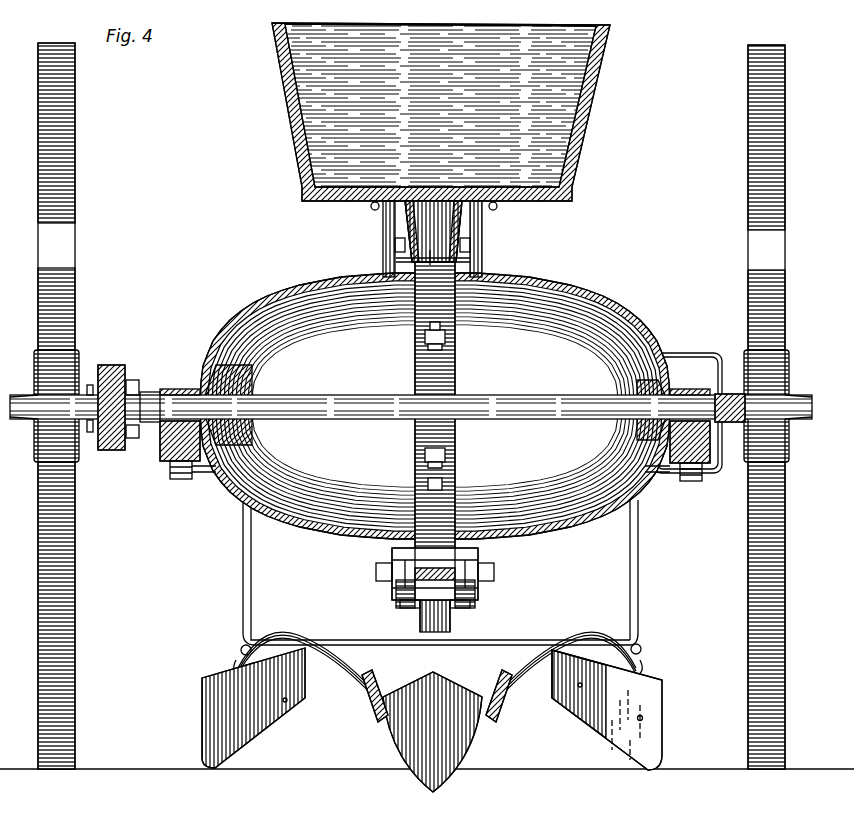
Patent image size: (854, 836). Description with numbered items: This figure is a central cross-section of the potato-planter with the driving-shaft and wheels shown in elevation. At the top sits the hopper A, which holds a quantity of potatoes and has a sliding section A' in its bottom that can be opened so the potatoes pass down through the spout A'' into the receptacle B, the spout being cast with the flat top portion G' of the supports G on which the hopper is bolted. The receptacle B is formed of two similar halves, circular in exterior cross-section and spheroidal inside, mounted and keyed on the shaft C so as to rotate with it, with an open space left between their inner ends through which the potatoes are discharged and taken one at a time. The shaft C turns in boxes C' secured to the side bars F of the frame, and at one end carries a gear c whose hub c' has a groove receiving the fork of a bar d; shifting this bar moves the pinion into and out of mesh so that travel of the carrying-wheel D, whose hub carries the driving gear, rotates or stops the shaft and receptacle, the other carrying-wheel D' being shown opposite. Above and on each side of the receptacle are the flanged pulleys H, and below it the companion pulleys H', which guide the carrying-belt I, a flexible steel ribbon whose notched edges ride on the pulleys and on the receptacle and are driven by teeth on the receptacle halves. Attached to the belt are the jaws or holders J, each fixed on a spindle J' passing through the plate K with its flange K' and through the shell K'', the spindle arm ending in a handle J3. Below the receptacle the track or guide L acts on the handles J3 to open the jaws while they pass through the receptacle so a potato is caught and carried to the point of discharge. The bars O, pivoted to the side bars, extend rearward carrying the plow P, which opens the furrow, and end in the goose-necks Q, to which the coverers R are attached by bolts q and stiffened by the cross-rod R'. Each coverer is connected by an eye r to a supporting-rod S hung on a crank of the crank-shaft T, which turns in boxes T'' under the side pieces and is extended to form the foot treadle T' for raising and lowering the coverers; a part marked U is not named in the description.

The hopper A is at (441, 112).
The sliding section A' is at (437, 153).
The spout A'' is at (477, 231).
The receptacle B is at (590, 292).
The shaft C is at (415, 406).
The boxes C' is at (452, 434).
The gear c is at (411, 396).
The hub c' is at (153, 393).
The bar d is at (135, 406).
The carrying-wheel D is at (56, 406).
The carrying-wheel D' is at (766, 407).
The side bars F is at (168, 462).
The supports G is at (415, 239).
The flat top portion G' is at (438, 222).
The wheels or pulleys H is at (436, 250).
The companion wheels or pulleys H' is at (436, 594).
The carrying-belt I is at (435, 412).
The jaws or holders J is at (455, 482).
The spindle J' is at (426, 617).
The handle J3 is at (422, 617).
The plate K is at (460, 501).
The flange or projection K' is at (454, 395).
The shell K'' is at (409, 488).
The track or guide L is at (480, 573).
The bars O is at (374, 700).
The plow P is at (432, 732).
The goose-neck Q is at (437, 651).
The bolt q is at (225, 712).
The coverers R is at (443, 709).
The cross-rod R' is at (404, 659).
The eye r is at (236, 663).
The supporting-rods S is at (447, 577).
The crank-shaft T is at (431, 489).
The foot treadle or lever T' is at (687, 401).
The boxes T'' is at (432, 493).
The bolt U is at (378, 562).